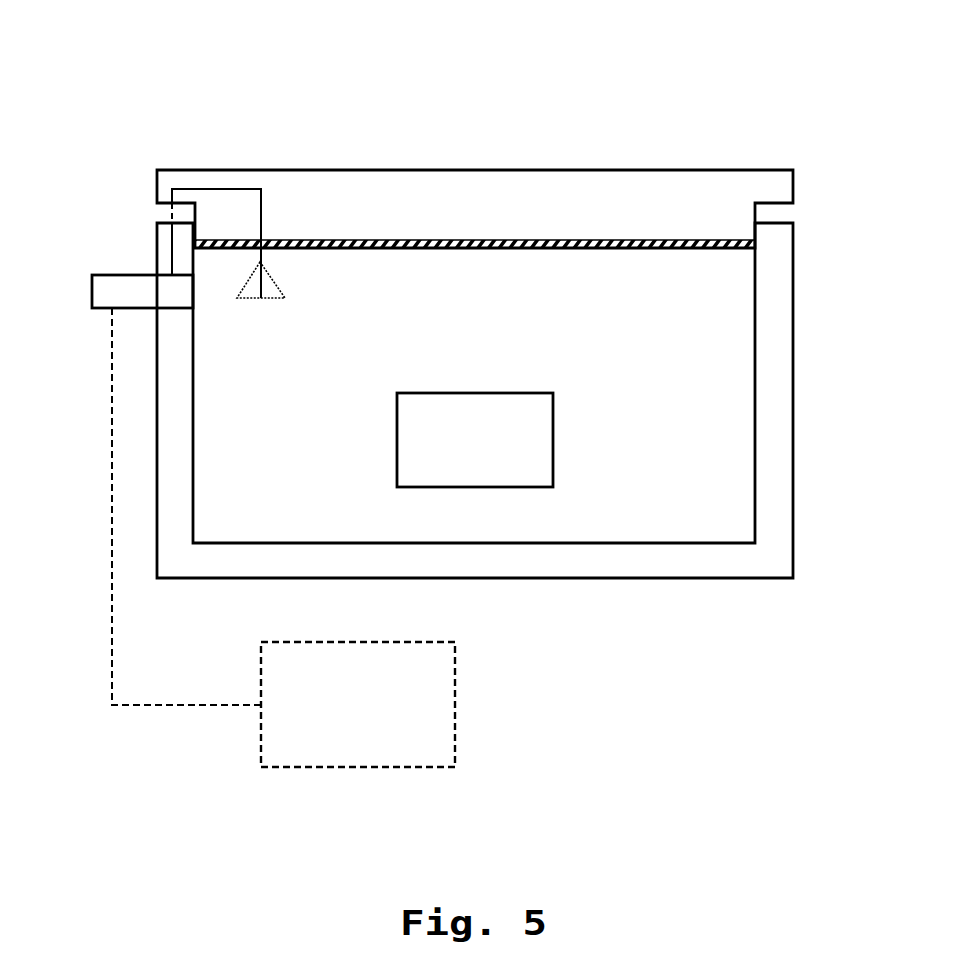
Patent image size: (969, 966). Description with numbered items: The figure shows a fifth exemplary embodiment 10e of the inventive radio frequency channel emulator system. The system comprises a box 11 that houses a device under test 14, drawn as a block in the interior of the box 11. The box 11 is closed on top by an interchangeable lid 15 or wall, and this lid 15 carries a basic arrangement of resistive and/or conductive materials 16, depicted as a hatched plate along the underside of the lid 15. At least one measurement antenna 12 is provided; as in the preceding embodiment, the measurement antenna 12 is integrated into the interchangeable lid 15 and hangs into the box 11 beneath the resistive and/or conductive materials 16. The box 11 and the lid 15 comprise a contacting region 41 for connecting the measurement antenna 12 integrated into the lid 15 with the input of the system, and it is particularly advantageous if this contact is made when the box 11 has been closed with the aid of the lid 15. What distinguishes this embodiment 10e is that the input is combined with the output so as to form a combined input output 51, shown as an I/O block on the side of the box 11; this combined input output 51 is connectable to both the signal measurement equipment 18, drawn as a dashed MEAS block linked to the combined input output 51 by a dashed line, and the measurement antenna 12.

The radio frequency channel emulator system 10e is at (216, 66).
The box 11 is at (793, 383).
The measurement antenna 12 is at (278, 290).
The device under test 14 is at (553, 440).
The interchangeable lid 15 is at (474, 169).
The resistive and/or conductive materials 16 is at (566, 240).
The signal measurement equipment 18 is at (320, 640).
The contacting region 41 is at (152, 211).
The combined input output 51 is at (92, 290).